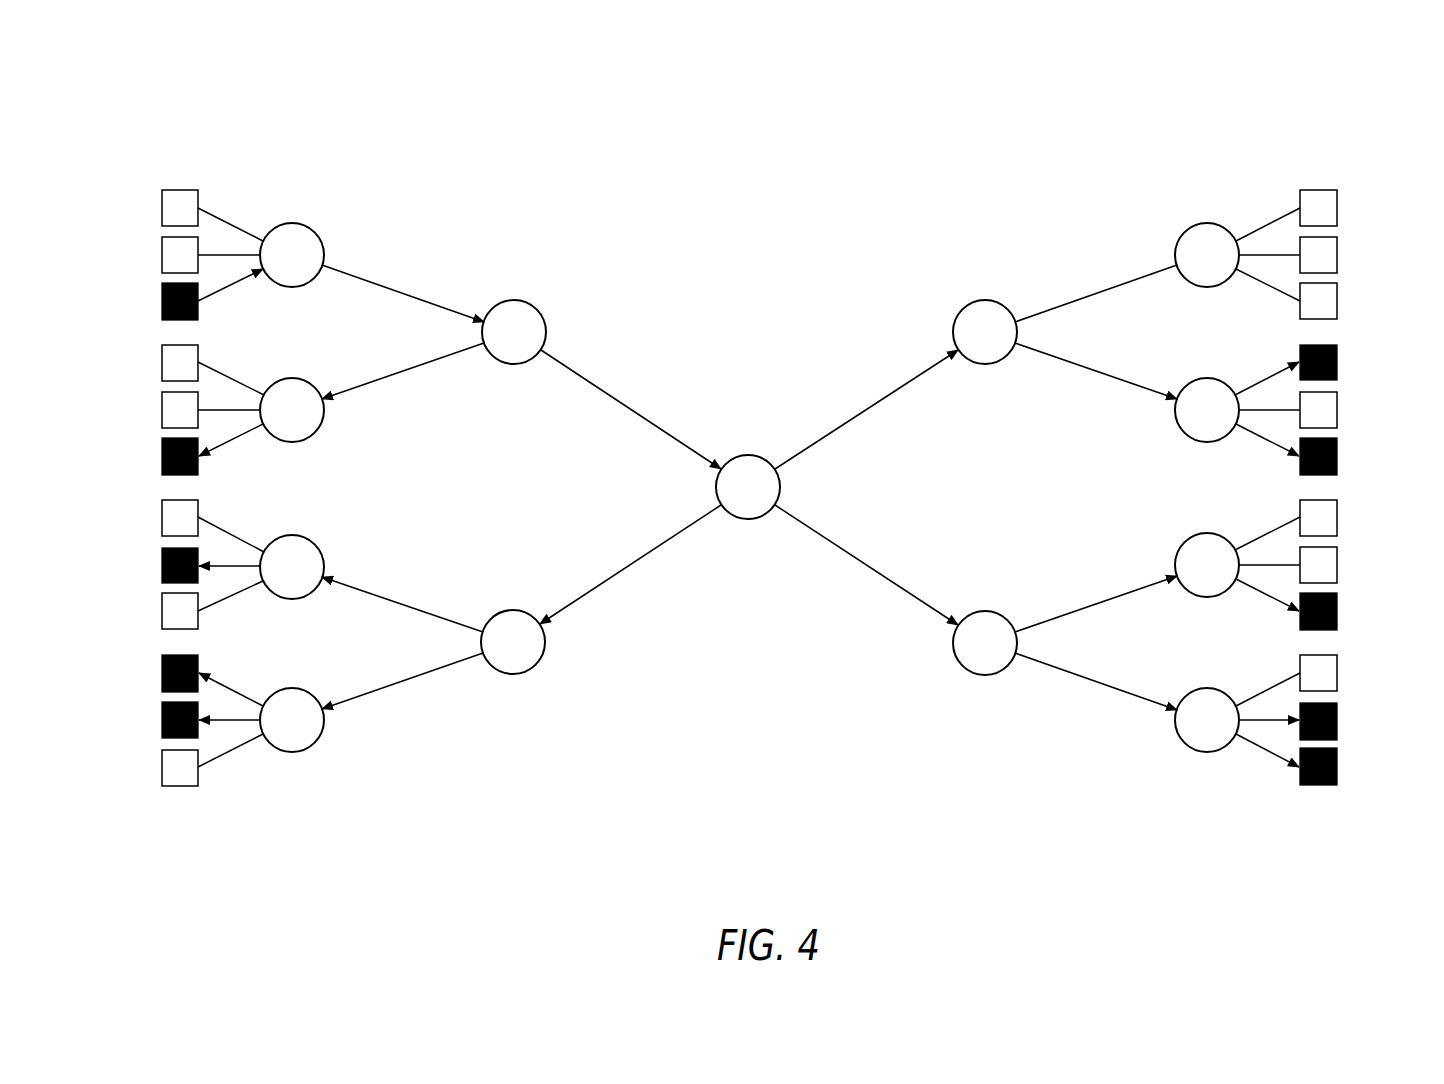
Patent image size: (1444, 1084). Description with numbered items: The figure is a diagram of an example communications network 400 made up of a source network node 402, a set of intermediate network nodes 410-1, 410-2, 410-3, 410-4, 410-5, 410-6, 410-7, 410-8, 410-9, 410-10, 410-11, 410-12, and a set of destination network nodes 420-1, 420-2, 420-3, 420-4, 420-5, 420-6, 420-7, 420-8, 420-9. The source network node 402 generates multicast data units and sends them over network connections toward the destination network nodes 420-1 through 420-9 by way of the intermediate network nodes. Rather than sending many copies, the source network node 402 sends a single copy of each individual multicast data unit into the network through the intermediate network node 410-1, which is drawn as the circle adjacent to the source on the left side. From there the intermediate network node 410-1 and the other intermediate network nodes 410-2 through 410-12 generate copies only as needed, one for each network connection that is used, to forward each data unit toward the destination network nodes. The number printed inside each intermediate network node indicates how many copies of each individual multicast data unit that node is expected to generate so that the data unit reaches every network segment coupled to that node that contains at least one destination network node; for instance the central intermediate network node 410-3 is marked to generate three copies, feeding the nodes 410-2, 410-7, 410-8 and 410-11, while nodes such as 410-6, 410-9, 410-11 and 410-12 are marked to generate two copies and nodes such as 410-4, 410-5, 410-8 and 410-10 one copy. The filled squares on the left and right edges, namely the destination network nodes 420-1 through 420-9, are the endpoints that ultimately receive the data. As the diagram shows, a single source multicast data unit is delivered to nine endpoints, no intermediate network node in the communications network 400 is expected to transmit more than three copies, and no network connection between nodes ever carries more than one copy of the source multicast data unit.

The communications network 400 is at (160, 128).
The source network node 402 is at (157, 302).
The intermediate network node 410-1 is at (292, 210).
The intermediate network node 410-2 is at (514, 290).
The intermediate network node 410-3 is at (748, 445).
The intermediate network node 410-4 is at (292, 368).
The intermediate network node 410-5 is at (292, 525).
The intermediate network node 410-6 is at (292, 683).
The intermediate network node 410-7 is at (513, 602).
The intermediate network node 410-8 is at (985, 290).
The intermediate network node 410-9 is at (1207, 370).
The intermediate network node 410-10 is at (1207, 527).
The intermediate network node 410-11 is at (985, 605).
The intermediate network node 410-12 is at (1207, 682).
The destination network node 420-1 is at (157, 455).
The destination network node 420-2 is at (157, 565).
The destination network node 420-3 is at (157, 672).
The destination network node 420-4 is at (157, 722).
The destination network node 420-5 is at (1343, 360).
The destination network node 420-6 is at (1343, 457).
The destination network node 420-7 is at (1343, 612).
The destination network node 420-8 is at (1343, 718).
The destination network node 420-9 is at (1343, 767).